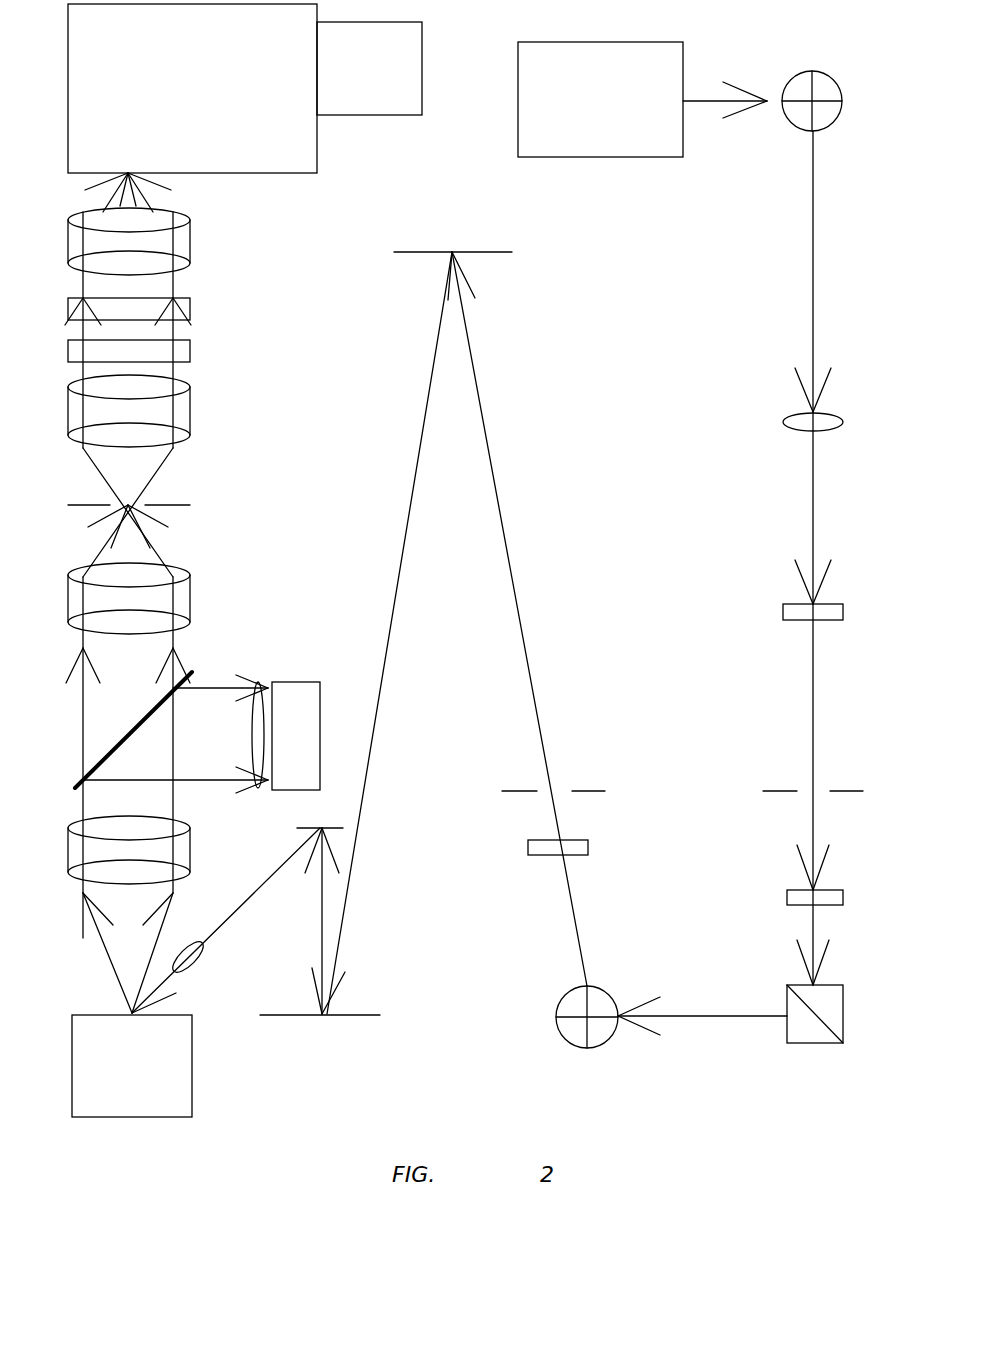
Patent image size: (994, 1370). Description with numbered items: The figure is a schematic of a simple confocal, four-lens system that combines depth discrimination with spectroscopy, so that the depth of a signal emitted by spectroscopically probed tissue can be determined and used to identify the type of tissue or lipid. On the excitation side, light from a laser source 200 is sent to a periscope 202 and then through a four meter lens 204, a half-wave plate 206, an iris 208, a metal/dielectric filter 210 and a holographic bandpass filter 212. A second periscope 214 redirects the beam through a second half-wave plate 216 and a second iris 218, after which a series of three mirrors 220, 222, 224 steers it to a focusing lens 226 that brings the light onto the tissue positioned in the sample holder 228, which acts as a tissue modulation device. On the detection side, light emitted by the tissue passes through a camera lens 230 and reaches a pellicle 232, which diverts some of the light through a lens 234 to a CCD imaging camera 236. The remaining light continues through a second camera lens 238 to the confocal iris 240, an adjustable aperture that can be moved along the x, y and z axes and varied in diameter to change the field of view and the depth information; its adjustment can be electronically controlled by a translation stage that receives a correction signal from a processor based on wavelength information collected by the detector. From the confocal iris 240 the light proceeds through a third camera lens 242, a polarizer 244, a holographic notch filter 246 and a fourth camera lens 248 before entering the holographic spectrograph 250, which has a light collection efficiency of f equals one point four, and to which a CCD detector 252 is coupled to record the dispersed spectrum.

The laser source 200 is at (624, 110).
The periscope 202 is at (797, 118).
The 4 meter lens 204 is at (788, 420).
The half-wave plate 206 is at (790, 612).
The iris 208 is at (777, 791).
The metal/dielectric filter 210 is at (787, 898).
The holographic bandpass filter 212 is at (790, 1002).
The second periscope 214 is at (600, 990).
The second half-wave plate 216 is at (528, 847).
The second iris 218 is at (520, 791).
The mirror 220 is at (490, 252).
The mirror 222 is at (352, 1014).
The mirror 224 is at (300, 828).
The focusing lens 226 is at (205, 960).
The sample holder 228 is at (156, 1080).
The camera lens 230 is at (190, 852).
The pellicle 232 is at (78, 784).
The lens 234 is at (252, 752).
The CCD imaging camera 236 is at (291, 686).
The second camera lens 238 is at (190, 600).
The confocal iris 240 is at (190, 506).
The third camera lens 242 is at (190, 415).
The polarizer 244 is at (190, 352).
The holographic notch filter 246 is at (190, 310).
The fourth camera lens 248 is at (190, 243).
The holographic spectrograph 250 is at (224, 67).
The CCD detector 252 is at (400, 85).